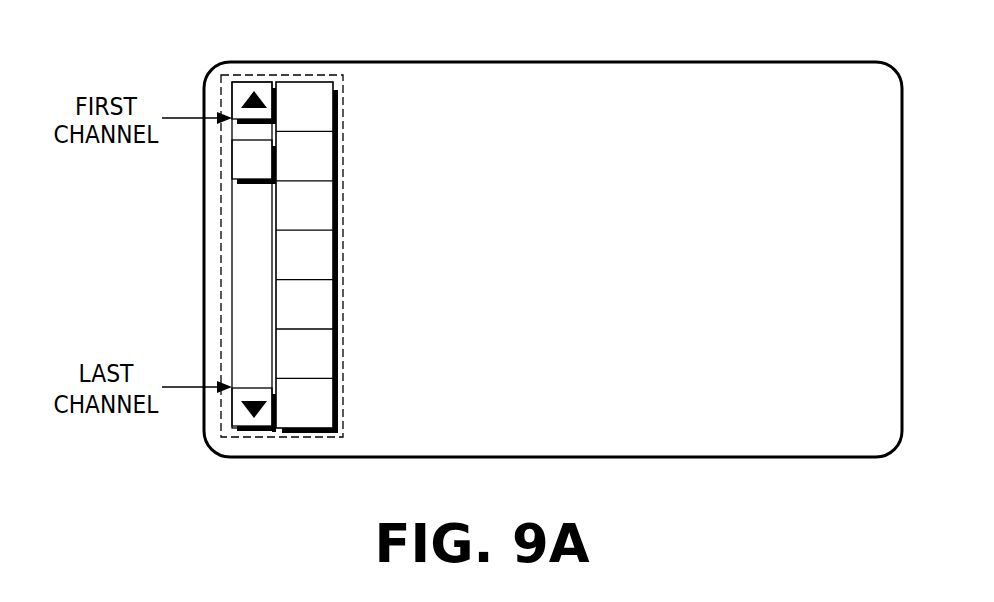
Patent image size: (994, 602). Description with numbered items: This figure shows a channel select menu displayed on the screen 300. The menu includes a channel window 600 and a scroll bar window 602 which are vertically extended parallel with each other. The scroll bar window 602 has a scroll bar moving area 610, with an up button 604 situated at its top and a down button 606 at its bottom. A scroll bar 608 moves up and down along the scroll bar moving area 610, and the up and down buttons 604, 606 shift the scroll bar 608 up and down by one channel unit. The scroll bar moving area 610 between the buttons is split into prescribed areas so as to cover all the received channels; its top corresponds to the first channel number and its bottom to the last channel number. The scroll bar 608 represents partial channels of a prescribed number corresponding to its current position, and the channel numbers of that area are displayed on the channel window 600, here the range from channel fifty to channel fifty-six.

The screen 300 is at (552, 61).
The channel window 600 is at (317, 74).
The scroll bar window 602 is at (204, 246).
The up button 604 is at (260, 80).
The down button 606 is at (242, 420).
The scroll bar 608 is at (243, 162).
The scroll bar moving area 610 is at (243, 264).